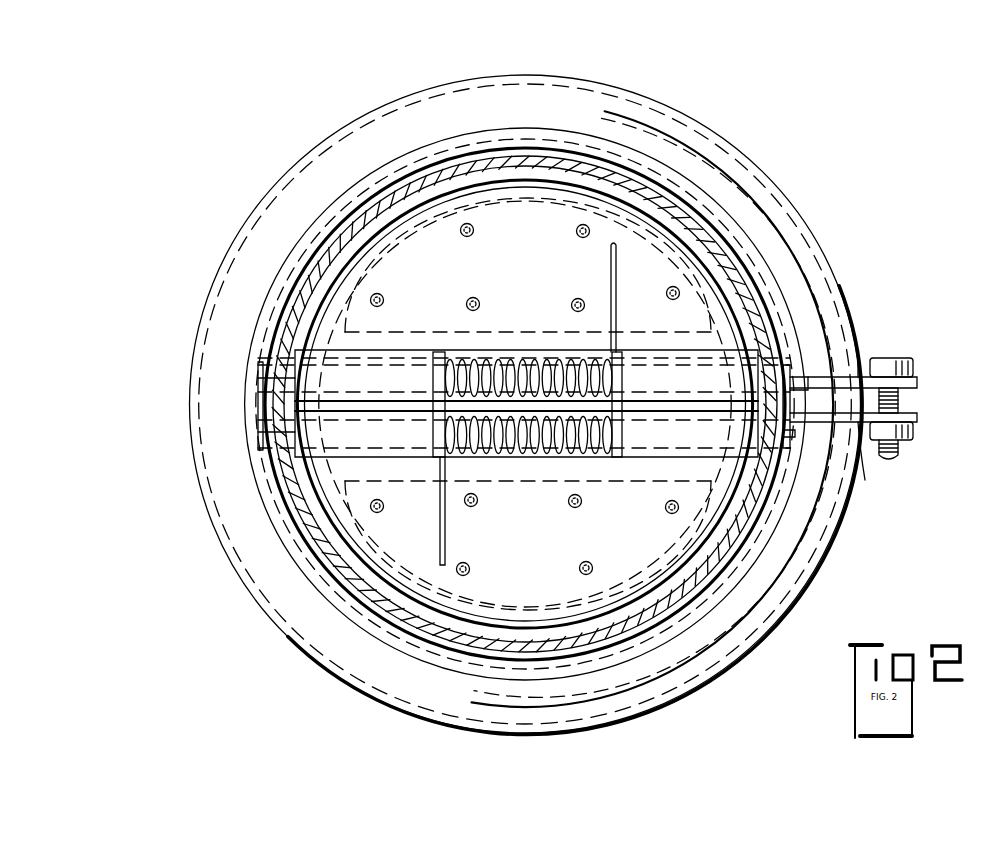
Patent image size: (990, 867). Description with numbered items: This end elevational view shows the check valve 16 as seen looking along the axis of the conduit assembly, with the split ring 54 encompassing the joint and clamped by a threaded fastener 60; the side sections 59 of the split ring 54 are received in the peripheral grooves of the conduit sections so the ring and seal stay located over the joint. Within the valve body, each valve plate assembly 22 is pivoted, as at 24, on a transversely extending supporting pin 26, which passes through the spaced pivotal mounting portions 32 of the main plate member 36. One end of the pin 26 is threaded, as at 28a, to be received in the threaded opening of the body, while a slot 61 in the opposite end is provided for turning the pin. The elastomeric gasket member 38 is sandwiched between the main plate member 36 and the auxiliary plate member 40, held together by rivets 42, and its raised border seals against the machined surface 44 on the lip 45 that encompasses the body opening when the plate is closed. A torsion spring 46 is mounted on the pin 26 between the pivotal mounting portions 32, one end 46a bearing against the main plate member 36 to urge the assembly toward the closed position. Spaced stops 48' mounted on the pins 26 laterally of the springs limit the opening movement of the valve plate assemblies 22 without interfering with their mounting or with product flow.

The check valve 16 is at (667, 200).
The valve plate assembly 22 is at (773, 327).
The pivot 24 is at (347, 445).
The supporting pin 26 is at (262, 413).
The threaded end 28a is at (262, 445).
The pivotal mounting portion 32 is at (263, 383).
The main plate member 36 is at (561, 200).
The gasket member 38 is at (470, 198).
The auxiliary plate member 40 is at (423, 250).
The rivet 42 is at (375, 292).
The machined surface 44 is at (738, 290).
The lip 45 is at (612, 612).
The torsion spring 46 is at (540, 352).
The spring end 46a is at (616, 283).
The stop 48' is at (525, 400).
The split ring 54 is at (787, 190).
The side section 59 is at (675, 147).
The threaded fastener 60 is at (913, 397).
The slot 61 is at (262, 386).